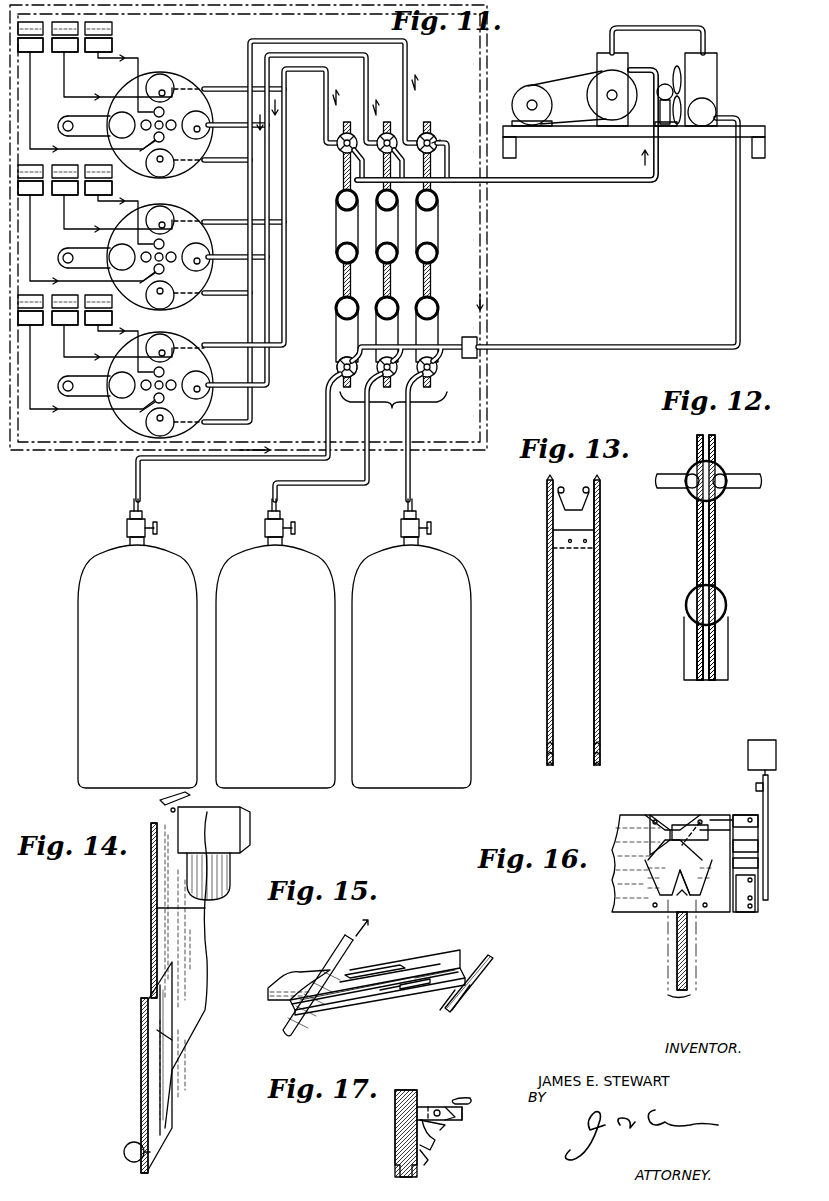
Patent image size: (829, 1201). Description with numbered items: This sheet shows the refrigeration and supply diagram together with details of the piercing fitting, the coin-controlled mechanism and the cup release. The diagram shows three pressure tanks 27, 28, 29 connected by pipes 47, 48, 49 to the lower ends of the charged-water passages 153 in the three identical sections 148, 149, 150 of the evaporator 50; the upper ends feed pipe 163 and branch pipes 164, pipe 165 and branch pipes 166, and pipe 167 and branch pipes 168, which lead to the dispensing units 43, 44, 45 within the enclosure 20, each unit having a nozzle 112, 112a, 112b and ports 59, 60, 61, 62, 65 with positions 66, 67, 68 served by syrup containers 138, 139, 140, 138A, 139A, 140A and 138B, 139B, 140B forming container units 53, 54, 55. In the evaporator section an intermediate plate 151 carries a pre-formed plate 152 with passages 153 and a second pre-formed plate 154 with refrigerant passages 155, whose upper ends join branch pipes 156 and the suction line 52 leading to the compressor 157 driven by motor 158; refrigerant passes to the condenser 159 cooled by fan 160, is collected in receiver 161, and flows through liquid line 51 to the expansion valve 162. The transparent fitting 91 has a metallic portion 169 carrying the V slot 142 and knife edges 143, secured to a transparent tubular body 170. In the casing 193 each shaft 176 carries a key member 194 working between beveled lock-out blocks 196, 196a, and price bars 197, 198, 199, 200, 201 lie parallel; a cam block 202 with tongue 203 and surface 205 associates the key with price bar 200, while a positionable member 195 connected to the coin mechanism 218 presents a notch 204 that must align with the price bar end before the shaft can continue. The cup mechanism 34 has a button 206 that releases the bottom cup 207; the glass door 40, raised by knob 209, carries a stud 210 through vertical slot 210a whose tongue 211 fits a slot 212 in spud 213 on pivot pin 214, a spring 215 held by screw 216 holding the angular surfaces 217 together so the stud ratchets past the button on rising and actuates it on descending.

In FIG. 11, the cabinet enclosure 20 is at (484, 300).
In FIG. 11, the pressure tank 27 is at (145, 622).
In FIG. 11, the pressure tank 28 is at (282, 626).
In FIG. 11, the pressure tank 29 is at (417, 628).
In FIG. 14, the cup mechanism 34 is at (252, 818).
In FIG. 14, the slidable glass door 40 is at (140, 1038).
In FIG. 17, the slidable glass door 40 is at (393, 1163).
In FIG. 11, the dispensing unit 43 is at (176, 64).
In FIG. 11, the dispensing unit 44 is at (181, 212).
In FIG. 11, the dispensing unit 45 is at (184, 335).
In FIG. 11, the pipe 47 is at (260, 461).
In FIG. 11, the pipe 48 is at (325, 486).
In FIG. 11, the pipe 49 is at (401, 480).
In FIG. 11, the evaporator 50 is at (393, 410).
In FIG. 11, the liquid line 51 is at (572, 340).
In FIG. 11, the suction line 52 is at (508, 184).
In FIG. 11, the syrup container unit 53 is at (122, 45).
In FIG. 11, the syrup container unit 54 is at (122, 190).
In FIG. 11, the syrup container unit 55 is at (122, 319).
In FIG. 11, the valve chamber 59 is at (122, 255).
In FIG. 11, the valve port 60 is at (160, 292).
In FIG. 11, the valve port 61 is at (196, 255).
In FIG. 11, the valve port 62 is at (160, 218).
In FIG. 11, the valve passage 65 is at (145, 390).
In FIG. 11, the position No. 2A 66 is at (165, 401).
In FIG. 11, the position 3A 67 is at (174, 383).
In FIG. 11, the position 4A 68 is at (152, 110).
In FIG. 13, the fitting 91 is at (535, 623).
In FIG. 11, the discharge nozzle 112 is at (84, 386).
In FIG. 11, the sensing tube 112a is at (96, 254).
In FIG. 11, the sensing tube 112b is at (96, 118).
In FIG. 11, the syrup container 138 is at (33, 318).
In FIG. 11, the syrup container 139 is at (67, 318).
In FIG. 11, the syrup container 140 is at (100, 318).
In FIG. 11, the syrup container 138A is at (37, 188).
In FIG. 11, the syrup container 139A is at (71, 188).
In FIG. 11, the syrup container 140A is at (104, 188).
In FIG. 11, the syrup container 138B is at (36, 45).
In FIG. 11, the syrup container 139B is at (70, 45).
In FIG. 11, the syrup container 140B is at (103, 45).
In FIG. 13, the V slot 142 is at (572, 490).
In FIG. 13, the knife edges 143 is at (557, 500).
In FIG. 11, the evaporator section 148 is at (337, 253).
In FIG. 11, the evaporator section 149 is at (398, 253).
In FIG. 11, the evaporator section 150 is at (437, 253).
In FIG. 12, the intermediate plate 151 is at (716, 548).
In FIG. 12, the pre-formed plate 152 is at (684, 662).
In FIG. 11, the passages 153 is at (338, 365).
In FIG. 12, the passages 153 is at (692, 603).
In FIG. 12, the second pre-formed plate 154 is at (716, 575).
In FIG. 11, the refrigerant passages 155 is at (436, 140).
In FIG. 12, the refrigerant passages 155 is at (722, 496).
In FIG. 11, the branch pipes 156 is at (356, 170).
In FIG. 11, the compressor 157 is at (598, 62).
In FIG. 11, the motor 158 is at (420, 135).
In FIG. 12, the motor 158 is at (688, 495).
In FIG. 11, the condenser 159 is at (708, 64).
In FIG. 11, the fan 160 is at (677, 68).
In FIG. 11, the receiver 161 is at (701, 122).
In FIG. 11, the expansion valve 162 is at (470, 360).
In FIG. 11, the pipe 163 is at (320, 105).
In FIG. 11, the branch pipes 164 is at (224, 87).
In FIG. 11, the pipe 165 is at (368, 100).
In FIG. 11, the branch pipes 166 is at (227, 124).
In FIG. 11, the pipe 167 is at (305, 40).
In FIG. 11, the branch pipes 168 is at (226, 164).
In FIG. 13, the metallic portion 169 is at (600, 526).
In FIG. 13, the transparent tubular body 170 is at (600, 626).
In FIG. 15, the shaft 176 is at (336, 950).
In FIG. 16, the shaft 176 is at (665, 948).
In FIG. 15, the casing 193 is at (292, 968).
In FIG. 16, the casing 193 is at (614, 894).
In FIG. 15, the key member 194 is at (340, 996).
In FIG. 16, the key member 194 is at (688, 790).
In FIG. 15, the positionable member 195 is at (476, 962).
In FIG. 16, the positionable member 195 is at (768, 790).
In FIG. 15, the lock-out slide 196 is at (292, 1004).
In FIG. 16, the lock-out slide 196 is at (650, 912).
In FIG. 15, the lock-out slide 196a is at (362, 1000).
In FIG. 16, the lock-out slide 196a is at (715, 912).
In FIG. 15, the price bar 197 is at (440, 955).
In FIG. 16, the price bar 197 is at (740, 828).
In FIG. 15, the price bar 198 is at (420, 966).
In FIG. 16, the price bar 198 is at (730, 818).
In FIG. 15, the price bar 199 is at (398, 968).
In FIG. 16, the price bar 199 is at (758, 838).
In FIG. 15, the price bar 200 is at (418, 990).
In FIG. 16, the price bar 200 is at (760, 850).
In FIG. 15, the price bar 201 is at (400, 1000).
In FIG. 16, the price bar 201 is at (760, 860).
In FIG. 15, the cam block 202 is at (352, 972).
In FIG. 16, the cam block 202 is at (678, 812).
In FIG. 16, the tongue 203 is at (686, 826).
In FIG. 15, the notch 204 is at (472, 982).
In FIG. 16, the notch 204 is at (760, 845).
In FIG. 16, the surface 205 is at (668, 822).
In FIG. 14, the button 206 is at (175, 812).
In FIG. 17, the button 206 is at (468, 1097).
In FIG. 14, the bottom cup 207 is at (232, 880).
In FIG. 14, the knob 209 is at (128, 1145).
In FIG. 14, the stud 210 is at (185, 950).
In FIG. 17, the stud 210 is at (463, 1110).
In FIG. 14, the vertical slot 210a is at (205, 910).
In FIG. 17, the rounded tongue portion 211 is at (448, 1106).
In FIG. 17, the slot 212 is at (428, 1105).
In FIG. 17, the spud 213 is at (417, 1112).
In FIG. 17, the pivot pin 214 is at (438, 1108).
In FIG. 17, the spring 215 is at (432, 1143).
In FIG. 17, the screw 216 is at (426, 1163).
In FIG. 17, the angular surfaces 217 is at (446, 1126).
In FIG. 16, the coin mechanism 218 is at (762, 742).